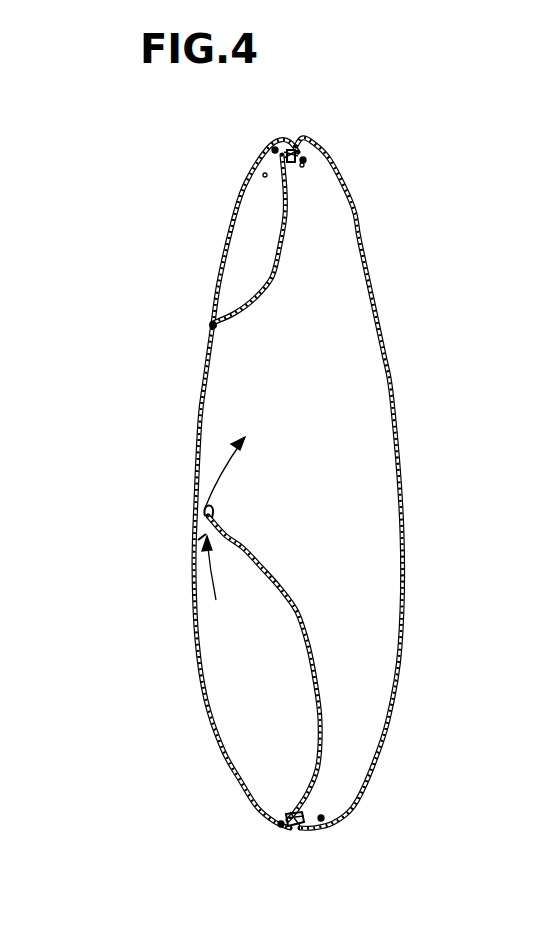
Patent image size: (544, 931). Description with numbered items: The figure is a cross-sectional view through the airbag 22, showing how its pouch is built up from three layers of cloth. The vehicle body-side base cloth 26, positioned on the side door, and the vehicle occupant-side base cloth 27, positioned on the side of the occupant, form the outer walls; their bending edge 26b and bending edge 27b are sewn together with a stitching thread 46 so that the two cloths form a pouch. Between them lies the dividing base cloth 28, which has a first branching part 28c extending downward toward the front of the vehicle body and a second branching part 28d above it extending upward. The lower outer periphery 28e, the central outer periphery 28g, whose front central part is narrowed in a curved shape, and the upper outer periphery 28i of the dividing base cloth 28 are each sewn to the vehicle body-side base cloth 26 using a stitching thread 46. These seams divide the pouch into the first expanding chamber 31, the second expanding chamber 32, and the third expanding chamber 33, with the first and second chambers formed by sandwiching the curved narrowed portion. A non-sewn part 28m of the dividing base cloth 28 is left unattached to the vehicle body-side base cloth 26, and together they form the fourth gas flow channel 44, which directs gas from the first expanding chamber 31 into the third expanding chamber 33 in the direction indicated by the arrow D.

The airbag 22 is at (392, 327).
The vehicle body-side base cloth 26 is at (200, 416).
The bending edge 26b is at (265, 175).
The vehicle occupant-side base cloth 27 is at (405, 537).
The bending edge 27b is at (302, 165).
The dividing base cloth 28 is at (287, 250).
The first branching part 28c is at (301, 611).
The second branching part 28d is at (262, 266).
The lower outer periphery 28e is at (290, 830).
The central outer periphery 28g is at (214, 330).
The upper outer periphery 28i is at (291, 146).
The non-sewn part 28m is at (215, 512).
The first expanding chamber 31 is at (263, 683).
The second expanding chamber 32 is at (271, 243).
The third expanding chamber 33 is at (368, 460).
The fourth gas flow channel 44 is at (202, 536).
The stitching thread 46 is at (274, 150).
The arrow D is at (210, 470).